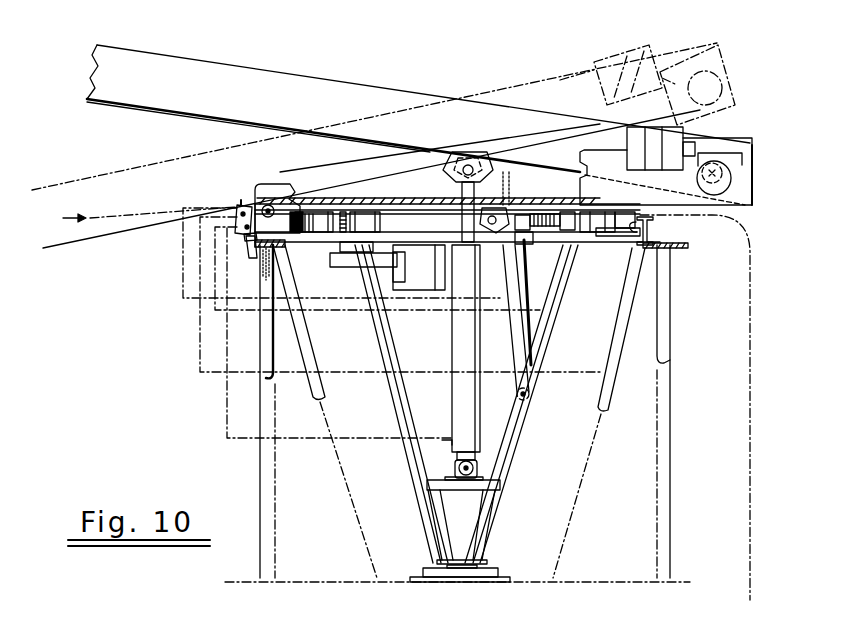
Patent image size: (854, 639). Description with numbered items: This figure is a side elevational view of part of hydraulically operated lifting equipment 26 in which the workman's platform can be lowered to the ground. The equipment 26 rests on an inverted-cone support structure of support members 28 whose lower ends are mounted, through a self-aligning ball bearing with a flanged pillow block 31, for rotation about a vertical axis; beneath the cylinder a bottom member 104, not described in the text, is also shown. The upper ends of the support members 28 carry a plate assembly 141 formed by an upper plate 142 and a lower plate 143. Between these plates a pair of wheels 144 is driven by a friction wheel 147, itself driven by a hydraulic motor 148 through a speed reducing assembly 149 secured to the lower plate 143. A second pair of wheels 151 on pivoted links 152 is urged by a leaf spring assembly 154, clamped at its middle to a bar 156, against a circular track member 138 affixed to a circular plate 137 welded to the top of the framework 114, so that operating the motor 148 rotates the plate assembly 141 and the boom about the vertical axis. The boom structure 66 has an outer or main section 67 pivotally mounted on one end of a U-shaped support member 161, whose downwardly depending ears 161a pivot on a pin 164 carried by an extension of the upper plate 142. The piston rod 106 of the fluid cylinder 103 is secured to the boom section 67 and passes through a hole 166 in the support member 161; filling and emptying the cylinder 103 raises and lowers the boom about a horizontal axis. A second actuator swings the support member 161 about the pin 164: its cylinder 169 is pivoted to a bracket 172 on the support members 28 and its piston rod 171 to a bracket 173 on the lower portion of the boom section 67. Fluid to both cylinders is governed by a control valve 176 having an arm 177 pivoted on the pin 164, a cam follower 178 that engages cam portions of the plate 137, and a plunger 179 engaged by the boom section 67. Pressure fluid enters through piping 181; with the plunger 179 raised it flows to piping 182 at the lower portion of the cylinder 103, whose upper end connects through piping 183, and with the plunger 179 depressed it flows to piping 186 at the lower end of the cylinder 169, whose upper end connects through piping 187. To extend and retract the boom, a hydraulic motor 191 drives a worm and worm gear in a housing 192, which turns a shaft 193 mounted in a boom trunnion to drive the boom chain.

The lifting apparatus 26 is at (406, 469).
The support members 28 is at (512, 441).
The flanged pillow block 31 is at (500, 564).
The boom structure 66 is at (166, 52).
The outer or main section of the boom structure 67 is at (223, 79).
The fluid cylinder 103 is at (470, 394).
The cylinder support plate 104 is at (478, 488).
The piston rod 106 is at (462, 190).
The framework 114 is at (666, 323).
The circular plate 137 is at (688, 243).
The circular track member 138 is at (654, 224).
The plate assembly 141 is at (265, 306).
The upper plate 142 is at (370, 200).
The lower plate 143 is at (598, 236).
The wheels 144 is at (322, 212).
The wheel 147 is at (388, 199).
The hydraulic motor 148 is at (396, 276).
The speed reducing assembly 149 is at (336, 262).
The additional wheels 151 is at (624, 233).
The links 152 is at (591, 214).
The leaf spring assembly 154 is at (566, 228).
The bar 156 is at (533, 242).
The U-shaped support member 161 is at (522, 92).
The downwardly depending ears 161a is at (270, 238).
The pin 164 is at (272, 205).
The hole 166 is at (480, 200).
The cylinder 169 is at (515, 330).
The piston rod 171 is at (543, 213).
The bracket 172 is at (532, 394).
The bracket 173 is at (512, 195).
The control valve 176 is at (236, 206).
The arm 177 is at (246, 237).
The cam follower 178 is at (252, 257).
The plunger 179 is at (242, 204).
The piping 181 is at (108, 212).
The piping 182 is at (240, 440).
The piping 183 is at (188, 300).
The piping 186 is at (206, 376).
The piping 187 is at (218, 312).
The motor 191 is at (672, 138).
The housing 192 is at (733, 172).
The shaft 193 is at (742, 178).